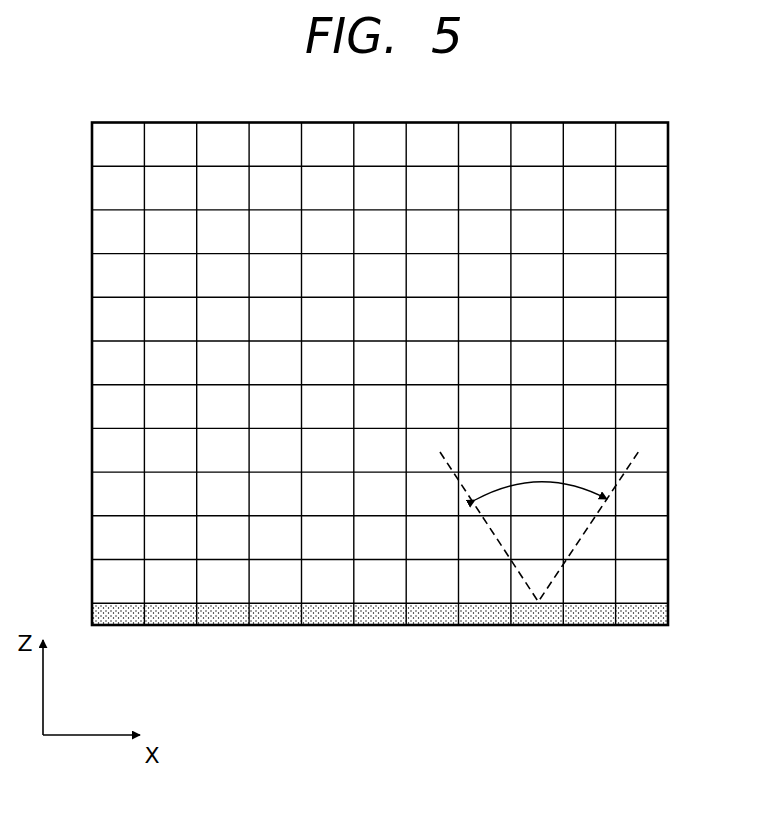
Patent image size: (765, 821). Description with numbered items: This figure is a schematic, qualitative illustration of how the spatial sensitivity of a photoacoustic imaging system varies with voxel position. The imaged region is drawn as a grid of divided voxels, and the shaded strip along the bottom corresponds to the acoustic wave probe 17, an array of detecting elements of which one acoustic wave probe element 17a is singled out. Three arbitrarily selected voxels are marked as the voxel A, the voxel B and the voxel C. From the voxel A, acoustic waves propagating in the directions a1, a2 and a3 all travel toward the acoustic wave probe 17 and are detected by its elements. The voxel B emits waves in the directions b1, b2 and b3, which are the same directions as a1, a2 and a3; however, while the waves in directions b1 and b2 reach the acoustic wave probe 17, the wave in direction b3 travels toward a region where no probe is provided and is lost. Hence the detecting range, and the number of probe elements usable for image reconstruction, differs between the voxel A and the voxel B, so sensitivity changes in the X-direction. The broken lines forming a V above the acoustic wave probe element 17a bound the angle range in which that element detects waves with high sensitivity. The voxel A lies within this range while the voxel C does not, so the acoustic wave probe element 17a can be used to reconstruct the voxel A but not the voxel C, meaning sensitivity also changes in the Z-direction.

The acoustic wave probe 17 is at (92, 662).
The acoustic wave probe element 17a is at (541, 626).
The voxel A is at (427, 266).
The direction a1 is at (328, 276).
The direction a2 is at (380, 276).
The direction a3 is at (432, 276).
The voxel B is at (691, 266).
The direction b1 is at (589, 276).
The direction b2 is at (642, 276).
The direction b3 is at (694, 276).
The voxel C is at (505, 527).